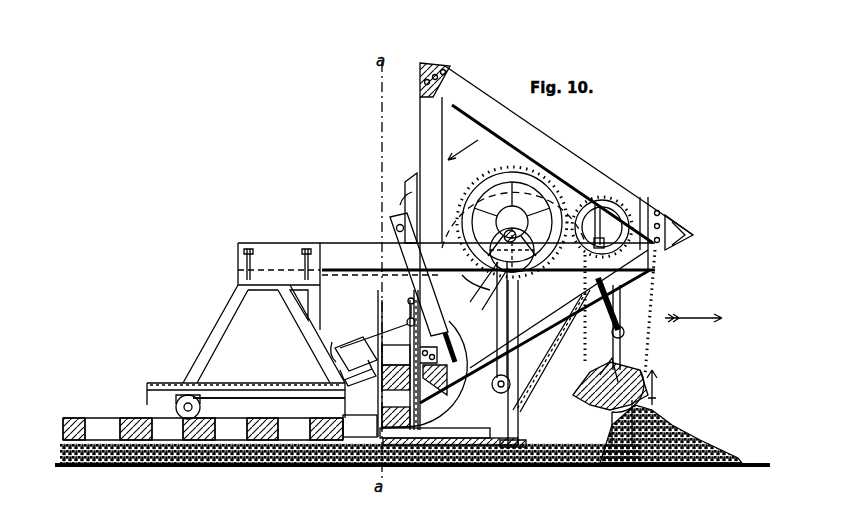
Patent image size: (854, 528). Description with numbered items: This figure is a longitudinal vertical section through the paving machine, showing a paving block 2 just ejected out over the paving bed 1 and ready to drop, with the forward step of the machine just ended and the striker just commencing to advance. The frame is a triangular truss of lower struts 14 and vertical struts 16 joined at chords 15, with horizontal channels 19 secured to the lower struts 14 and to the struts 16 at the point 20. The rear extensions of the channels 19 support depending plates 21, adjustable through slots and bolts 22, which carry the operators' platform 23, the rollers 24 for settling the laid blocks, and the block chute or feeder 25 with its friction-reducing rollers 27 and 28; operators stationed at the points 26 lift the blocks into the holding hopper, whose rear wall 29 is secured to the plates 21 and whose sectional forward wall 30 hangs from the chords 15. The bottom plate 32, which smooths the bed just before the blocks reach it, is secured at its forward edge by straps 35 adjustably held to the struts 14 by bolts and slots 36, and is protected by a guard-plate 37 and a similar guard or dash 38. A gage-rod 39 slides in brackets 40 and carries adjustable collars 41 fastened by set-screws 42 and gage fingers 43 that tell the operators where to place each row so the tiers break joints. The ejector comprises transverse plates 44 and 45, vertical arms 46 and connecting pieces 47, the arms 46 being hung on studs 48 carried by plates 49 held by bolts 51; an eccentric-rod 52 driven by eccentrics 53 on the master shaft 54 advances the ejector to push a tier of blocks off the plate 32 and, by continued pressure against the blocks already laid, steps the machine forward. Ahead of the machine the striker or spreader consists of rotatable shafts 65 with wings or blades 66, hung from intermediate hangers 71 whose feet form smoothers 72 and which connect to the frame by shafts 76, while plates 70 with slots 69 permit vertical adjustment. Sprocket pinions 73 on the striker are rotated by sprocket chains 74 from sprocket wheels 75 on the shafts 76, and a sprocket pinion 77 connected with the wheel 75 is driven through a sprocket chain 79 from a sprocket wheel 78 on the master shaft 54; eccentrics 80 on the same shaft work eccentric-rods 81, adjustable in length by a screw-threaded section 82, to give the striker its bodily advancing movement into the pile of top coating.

The paving bed 1 is at (583, 468).
The paving blocks 2 is at (128, 440).
The lower struts 14 is at (500, 108).
The chords 15 is at (420, 70).
The struts 16 is at (428, 130).
The horizontal channels 19 is at (345, 250).
The point 20 is at (471, 286).
The depending plates 21 is at (260, 244).
The slots and bolts 22 is at (244, 251).
The operators' platform 23 is at (163, 383).
The rollers 24 is at (176, 407).
The block chute or feeder 25 is at (437, 387).
The operators' points 26 is at (237, 345).
The rollers 27 is at (335, 356).
The rollers 28 is at (318, 398).
The rear wall 29 is at (398, 437).
The forward wall 30 is at (430, 445).
The bottom plate 32 is at (505, 463).
The straps 35 is at (508, 395).
The bolts and slots 36 is at (545, 345).
The guard-plate 37 is at (510, 430).
The guard or dash 38 is at (540, 378).
The gage-rod 39 is at (409, 310).
The brackets 40 is at (377, 362).
The adjustable collars 41 is at (428, 355).
The set-screws 42 is at (407, 301).
The gage fingers 43 is at (405, 326).
The transverse plate 44 is at (452, 336).
The ejecting plate 45 is at (332, 342).
The vertical arms 46 is at (381, 278).
The connecting pieces 47 is at (499, 331).
The studs 48 is at (396, 225).
The plates 49 is at (410, 196).
The bolts 51 is at (407, 195).
The eccentric-rod 52 is at (498, 296).
The eccentrics 53 is at (490, 251).
The master shaft 54 is at (517, 236).
The rotatable shafts 65 is at (655, 368).
The wings or blades 66 is at (640, 360).
The slots 69 is at (604, 240).
The plates 70 is at (600, 205).
The intermediate hangers 71 is at (650, 310).
The smoother 72 is at (607, 468).
The sprocket pinions 73 is at (640, 405).
The sprocket chains 74 is at (640, 345).
The sprocket wheels 75 is at (590, 200).
The shafts 76 is at (641, 200).
The sprocket pinion 77 is at (650, 263).
The sprocket wheel 78 is at (480, 186).
The sprocket chain 79 is at (575, 200).
The eccentrics 80 is at (512, 222).
The eccentric-rods 81 is at (552, 284).
The screw-threaded section 82 is at (611, 324).